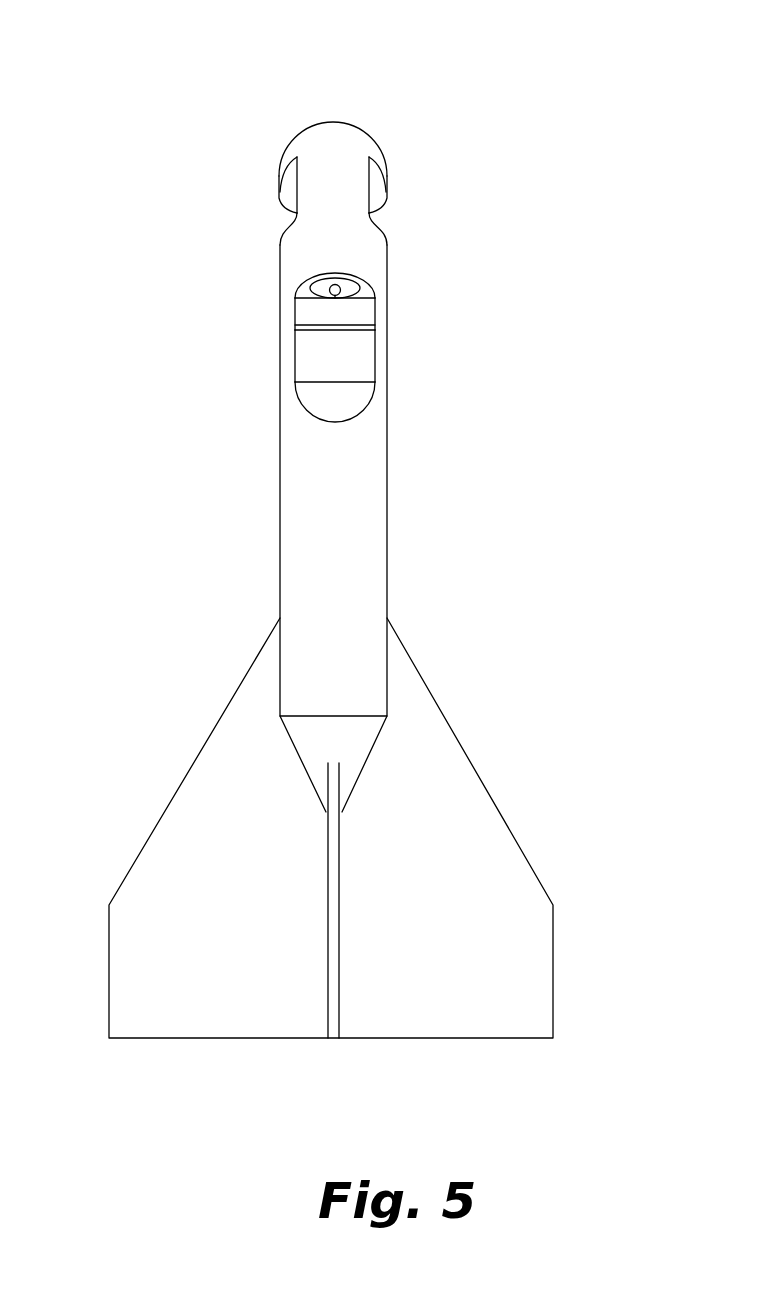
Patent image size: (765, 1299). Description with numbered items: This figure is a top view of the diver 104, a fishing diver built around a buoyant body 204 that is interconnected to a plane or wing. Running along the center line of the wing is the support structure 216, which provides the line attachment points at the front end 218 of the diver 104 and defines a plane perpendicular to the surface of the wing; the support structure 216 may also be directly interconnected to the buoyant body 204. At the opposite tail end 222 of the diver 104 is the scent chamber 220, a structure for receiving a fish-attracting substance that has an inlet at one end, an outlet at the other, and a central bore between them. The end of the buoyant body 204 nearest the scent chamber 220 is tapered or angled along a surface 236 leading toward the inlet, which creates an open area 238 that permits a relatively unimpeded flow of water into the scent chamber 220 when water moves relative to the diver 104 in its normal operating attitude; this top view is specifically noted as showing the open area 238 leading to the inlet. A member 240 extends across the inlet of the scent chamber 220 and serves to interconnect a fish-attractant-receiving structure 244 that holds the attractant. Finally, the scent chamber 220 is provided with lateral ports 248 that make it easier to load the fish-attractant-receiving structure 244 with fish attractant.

The diver 104 is at (270, 550).
The buoyant body 204 is at (352, 498).
The support structure 216 is at (331, 1030).
The front end 218 is at (240, 1038).
The scent chamber 220 is at (295, 197).
The tail end 222 is at (333, 122).
The tapered surface 236 is at (343, 398).
The open area 238 is at (313, 358).
The member 240 is at (313, 313).
The fish-attractant-receiving structure 244 is at (345, 289).
The lateral ports 248 is at (295, 202).